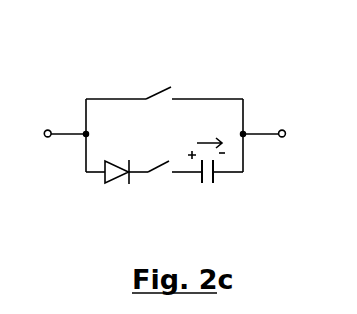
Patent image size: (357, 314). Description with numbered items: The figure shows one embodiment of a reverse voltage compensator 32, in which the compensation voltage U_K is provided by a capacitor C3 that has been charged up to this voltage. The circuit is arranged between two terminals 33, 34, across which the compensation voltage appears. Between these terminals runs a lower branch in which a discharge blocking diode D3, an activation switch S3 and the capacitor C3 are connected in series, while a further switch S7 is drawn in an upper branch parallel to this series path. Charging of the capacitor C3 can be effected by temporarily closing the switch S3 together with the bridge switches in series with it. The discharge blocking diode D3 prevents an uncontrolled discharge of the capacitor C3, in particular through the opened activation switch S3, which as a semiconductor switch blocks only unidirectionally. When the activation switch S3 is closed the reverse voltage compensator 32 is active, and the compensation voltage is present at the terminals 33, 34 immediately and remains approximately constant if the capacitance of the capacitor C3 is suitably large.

The reverse voltage compensator 32 is at (183, 123).
The terminal 33 is at (47, 125).
The terminal 34 is at (282, 125).
The switch S7 is at (159, 78).
The discharge blocking diode D3 is at (119, 190).
The activation switch S3 is at (160, 191).
The capacitor C3 is at (206, 186).